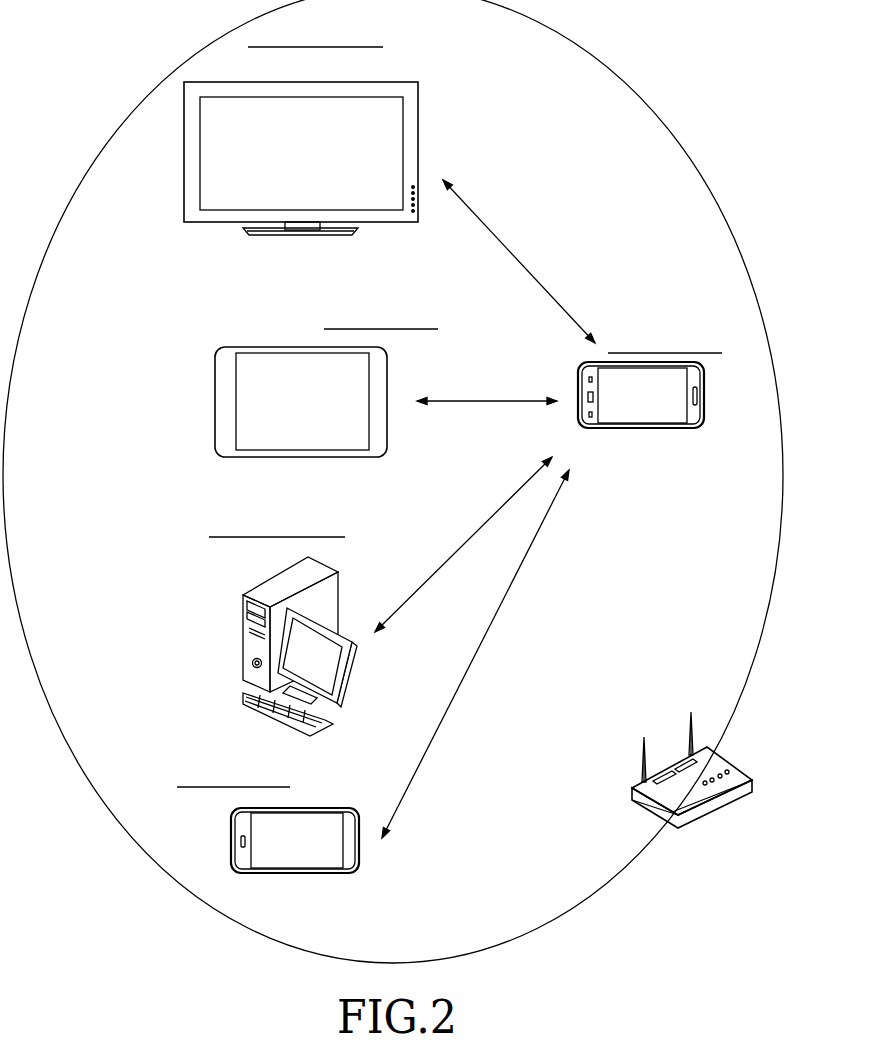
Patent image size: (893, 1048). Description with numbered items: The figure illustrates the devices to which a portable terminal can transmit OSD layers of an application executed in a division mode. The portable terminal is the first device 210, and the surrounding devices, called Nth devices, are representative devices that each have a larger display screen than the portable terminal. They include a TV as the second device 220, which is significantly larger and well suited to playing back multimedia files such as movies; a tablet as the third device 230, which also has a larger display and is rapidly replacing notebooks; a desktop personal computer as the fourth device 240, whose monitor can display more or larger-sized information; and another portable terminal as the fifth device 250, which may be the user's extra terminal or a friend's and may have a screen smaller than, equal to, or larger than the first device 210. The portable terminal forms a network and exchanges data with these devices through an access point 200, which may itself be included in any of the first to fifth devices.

The access point 200 is at (738, 767).
The first device 210 is at (705, 397).
The second device 220 is at (502, 41).
The third device 230 is at (215, 400).
The fourth device 240 is at (243, 635).
The fifth device 250 is at (231, 840).